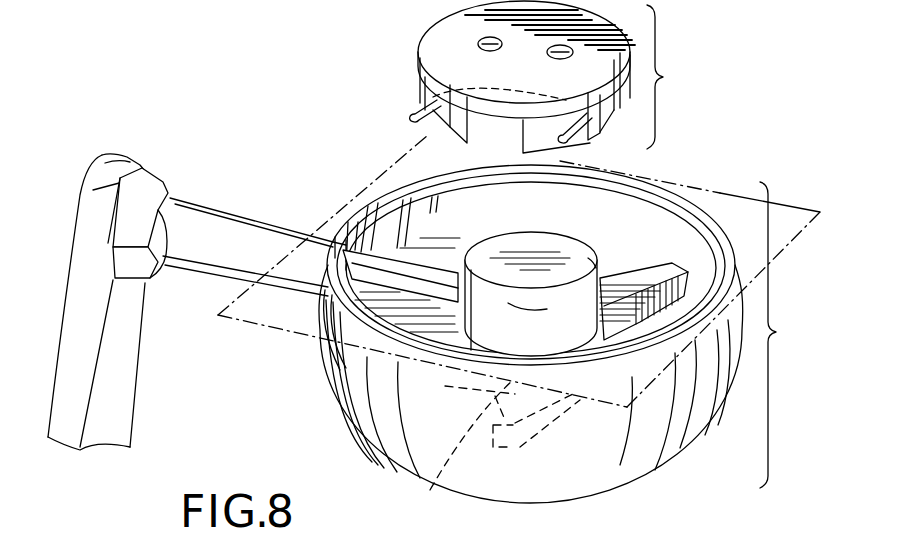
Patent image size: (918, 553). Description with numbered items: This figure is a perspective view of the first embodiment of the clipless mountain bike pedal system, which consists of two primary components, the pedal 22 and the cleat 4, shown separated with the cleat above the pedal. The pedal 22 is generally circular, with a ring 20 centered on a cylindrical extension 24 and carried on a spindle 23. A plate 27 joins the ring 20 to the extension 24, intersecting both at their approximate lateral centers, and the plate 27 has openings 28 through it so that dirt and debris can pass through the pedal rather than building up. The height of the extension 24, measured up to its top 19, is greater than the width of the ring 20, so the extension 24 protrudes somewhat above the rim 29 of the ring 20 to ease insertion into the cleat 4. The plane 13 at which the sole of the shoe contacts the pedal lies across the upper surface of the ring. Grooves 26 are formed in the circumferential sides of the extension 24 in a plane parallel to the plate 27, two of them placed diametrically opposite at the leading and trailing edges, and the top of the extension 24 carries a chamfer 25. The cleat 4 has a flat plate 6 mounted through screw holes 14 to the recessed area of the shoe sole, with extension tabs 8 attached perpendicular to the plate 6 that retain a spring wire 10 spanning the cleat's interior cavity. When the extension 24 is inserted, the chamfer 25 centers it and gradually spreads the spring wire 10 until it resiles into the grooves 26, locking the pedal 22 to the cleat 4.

The cleat 4 is at (684, 92).
The flat plate 6 is at (433, 38).
The extension tabs 8 is at (453, 133).
The spring wire 10 is at (488, 84).
The plane 13 is at (798, 205).
The screw holes 14 is at (548, 54).
The top of extension 19 is at (533, 243).
The ring 20 is at (697, 437).
The pedal 22 is at (809, 347).
The spindle 23 is at (198, 217).
The cylindrical extension 24 is at (492, 346).
The chamfer 25 is at (584, 268).
The grooves 26 is at (517, 310).
The plate 27 is at (617, 287).
The openings 28 is at (667, 325).
The rim 29 is at (456, 170).